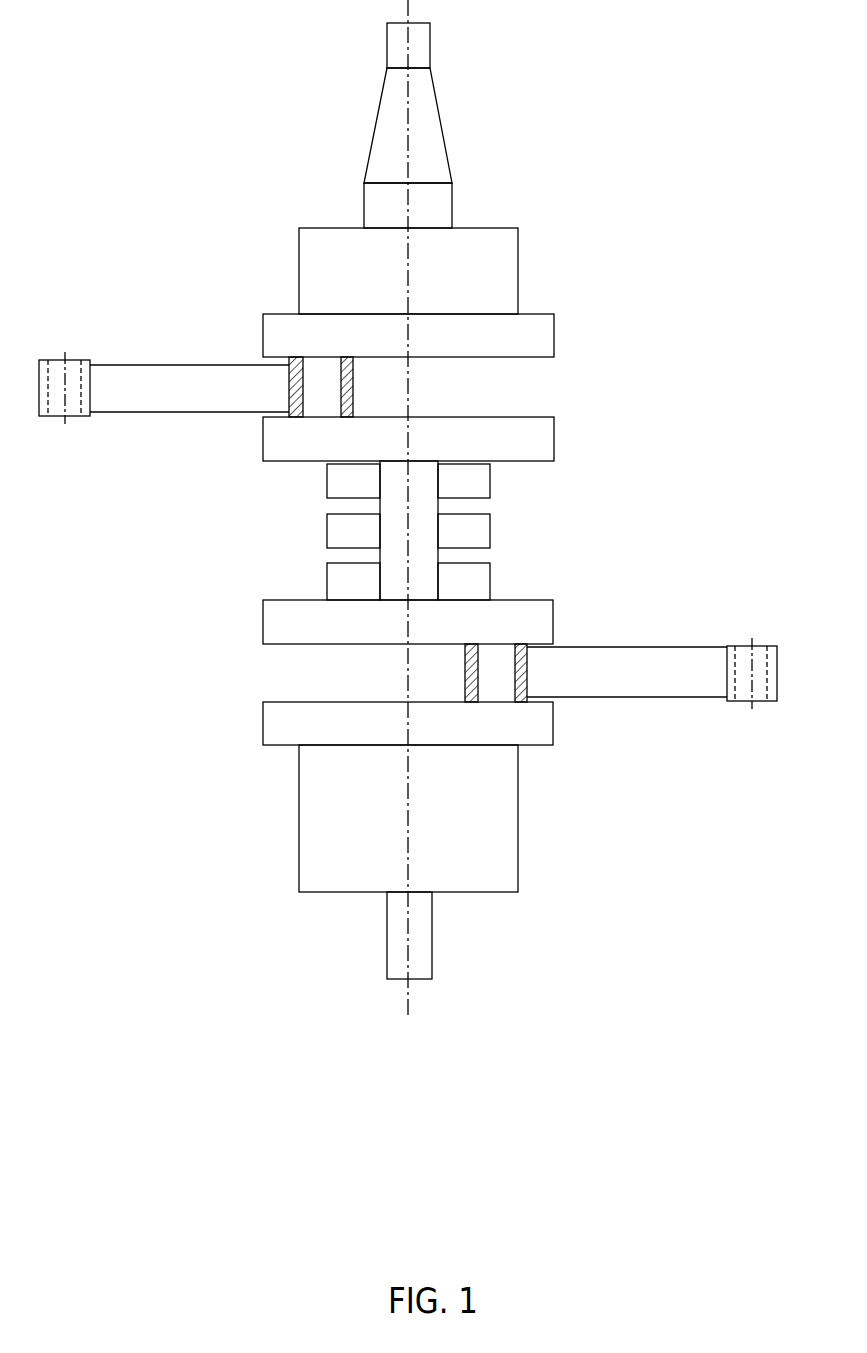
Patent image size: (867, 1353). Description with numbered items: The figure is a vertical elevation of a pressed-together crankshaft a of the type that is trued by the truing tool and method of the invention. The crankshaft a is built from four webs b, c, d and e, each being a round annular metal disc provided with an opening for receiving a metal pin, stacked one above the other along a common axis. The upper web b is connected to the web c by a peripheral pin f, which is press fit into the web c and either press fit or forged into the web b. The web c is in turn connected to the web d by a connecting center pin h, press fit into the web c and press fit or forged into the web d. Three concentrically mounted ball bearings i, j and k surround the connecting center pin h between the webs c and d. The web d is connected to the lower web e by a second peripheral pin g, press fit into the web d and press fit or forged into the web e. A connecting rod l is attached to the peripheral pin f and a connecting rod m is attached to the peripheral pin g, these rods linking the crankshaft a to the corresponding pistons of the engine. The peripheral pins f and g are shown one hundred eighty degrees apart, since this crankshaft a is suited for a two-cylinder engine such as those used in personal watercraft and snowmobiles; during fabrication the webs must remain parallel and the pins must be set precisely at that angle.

The pressed-together crankshaft a is at (443, 110).
The web b is at (560, 333).
The web c is at (560, 438).
The web d is at (553, 623).
The web e is at (553, 729).
The peripheral pin f is at (323, 392).
The peripheral pin g is at (492, 674).
The connecting center pin h is at (409, 530).
The ball bearing i is at (327, 481).
The ball bearing j is at (327, 531).
The ball bearing k is at (327, 580).
The connecting rod l is at (170, 362).
The connecting rod m is at (670, 645).